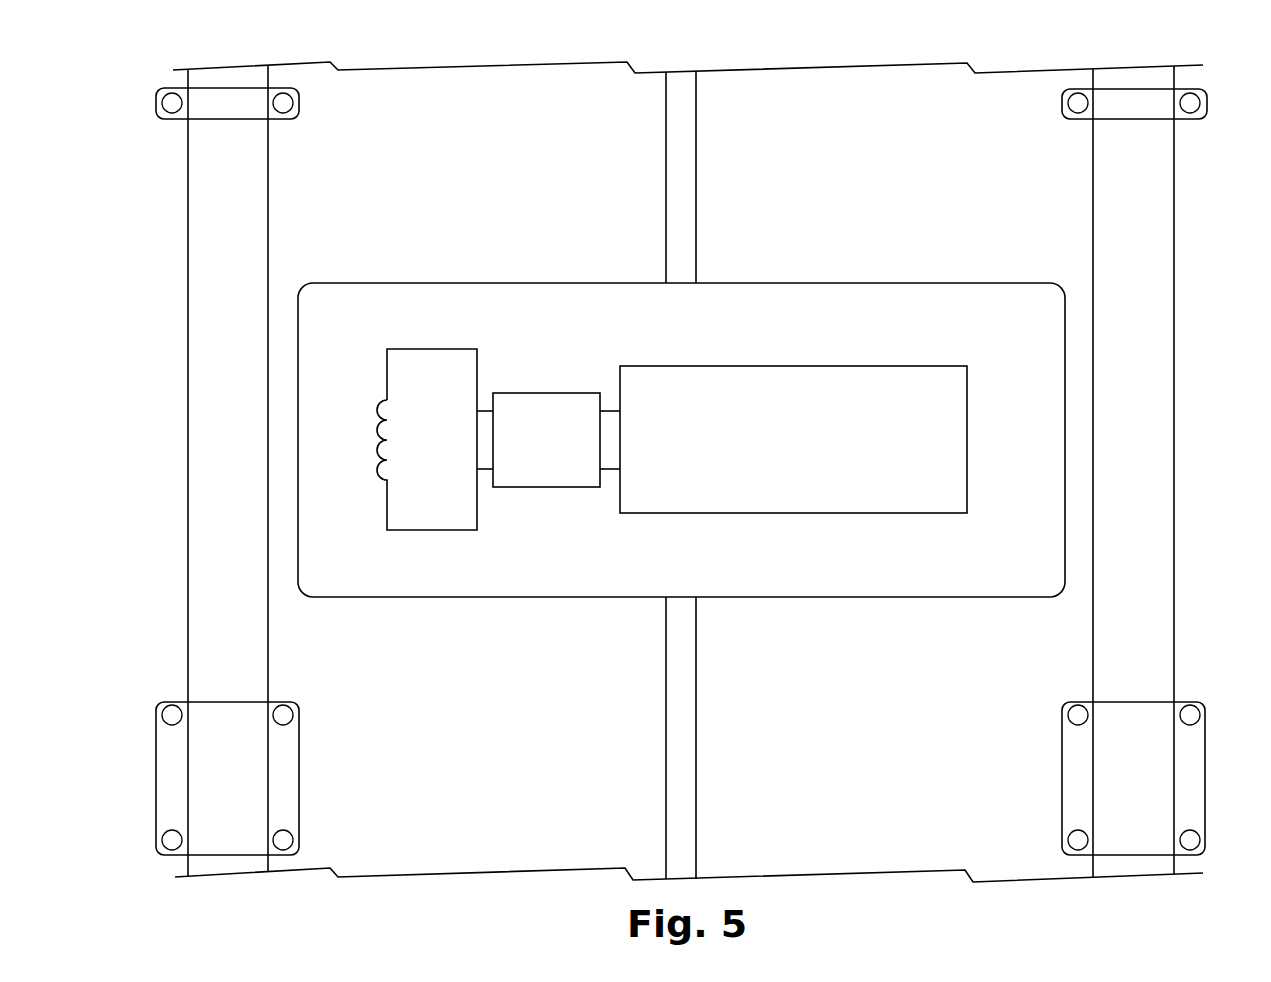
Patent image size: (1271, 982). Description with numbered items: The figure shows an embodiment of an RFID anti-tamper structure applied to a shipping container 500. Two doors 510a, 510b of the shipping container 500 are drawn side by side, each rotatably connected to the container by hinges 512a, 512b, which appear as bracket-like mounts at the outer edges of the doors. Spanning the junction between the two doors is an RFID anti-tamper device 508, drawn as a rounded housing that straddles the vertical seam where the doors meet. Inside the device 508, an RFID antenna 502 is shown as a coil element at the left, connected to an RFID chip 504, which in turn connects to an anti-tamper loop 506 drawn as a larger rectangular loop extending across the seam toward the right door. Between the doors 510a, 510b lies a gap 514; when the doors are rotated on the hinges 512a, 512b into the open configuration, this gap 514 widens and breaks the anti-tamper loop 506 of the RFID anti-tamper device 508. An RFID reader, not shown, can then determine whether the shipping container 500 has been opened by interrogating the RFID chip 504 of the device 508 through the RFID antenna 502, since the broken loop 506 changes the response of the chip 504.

The shipping container 500 is at (290, 62).
The RFID antenna 502 is at (376, 486).
The RFID chip 504 is at (535, 405).
The anti-tamper loop 506 is at (793, 462).
The RFID anti-tamper device 508 is at (487, 597).
The door 510a is at (452, 823).
The door 510b is at (858, 827).
The hinge 512a is at (225, 688).
The hinge 512b is at (1143, 683).
The gap 514 is at (713, 295).